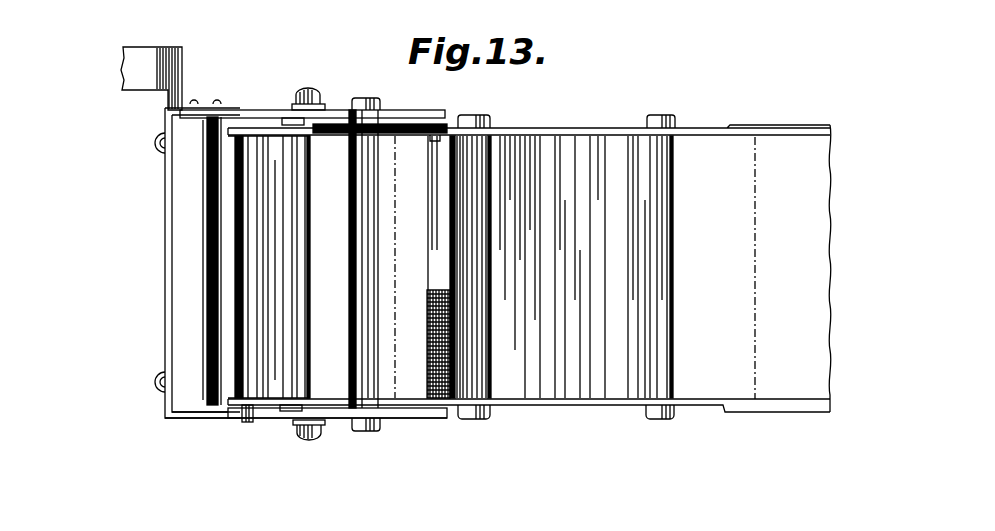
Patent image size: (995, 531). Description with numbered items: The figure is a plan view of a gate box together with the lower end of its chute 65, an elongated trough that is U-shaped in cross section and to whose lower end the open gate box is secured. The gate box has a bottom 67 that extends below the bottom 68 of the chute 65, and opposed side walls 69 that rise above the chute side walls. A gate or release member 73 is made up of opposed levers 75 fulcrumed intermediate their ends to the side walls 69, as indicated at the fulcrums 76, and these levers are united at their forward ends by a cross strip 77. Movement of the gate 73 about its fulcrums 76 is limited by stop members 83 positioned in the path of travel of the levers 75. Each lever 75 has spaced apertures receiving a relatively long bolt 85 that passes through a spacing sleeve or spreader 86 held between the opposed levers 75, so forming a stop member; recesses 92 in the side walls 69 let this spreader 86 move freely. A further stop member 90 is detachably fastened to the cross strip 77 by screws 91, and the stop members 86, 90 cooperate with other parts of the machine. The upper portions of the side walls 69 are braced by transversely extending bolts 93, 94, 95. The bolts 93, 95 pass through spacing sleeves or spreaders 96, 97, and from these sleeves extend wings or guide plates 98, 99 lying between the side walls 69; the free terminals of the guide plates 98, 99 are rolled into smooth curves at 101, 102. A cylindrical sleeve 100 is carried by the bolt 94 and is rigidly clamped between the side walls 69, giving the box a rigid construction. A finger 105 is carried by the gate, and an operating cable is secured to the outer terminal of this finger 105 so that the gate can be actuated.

The chute 65 is at (793, 128).
The gate box bottom 67 is at (413, 378).
The chute bottom 68 is at (818, 378).
The side walls 69 is at (553, 130).
The gate 73 is at (165, 417).
The levers 75 is at (252, 110).
The fulcrums 76 is at (312, 89).
The cross strip 77 is at (165, 287).
The stop members 83 is at (245, 422).
The bolt 85 is at (365, 437).
The spacing sleeve 86 is at (363, 292).
The stop member 90 is at (186, 322).
The screws 91 is at (160, 143).
The recesses 92 is at (393, 130).
The bolt 93 is at (288, 418).
The bolt 94 is at (472, 422).
The bolt 95 is at (658, 422).
The spacing sleeve 96 is at (297, 258).
The spacing sleeve 97 is at (673, 282).
The guide plate 98 is at (267, 365).
The guide plate 99 is at (633, 373).
The cylindrical sleeve 100 is at (478, 160).
The curved terminal 101 is at (238, 207).
The curved terminal 102 is at (450, 128).
The finger 105 is at (135, 53).